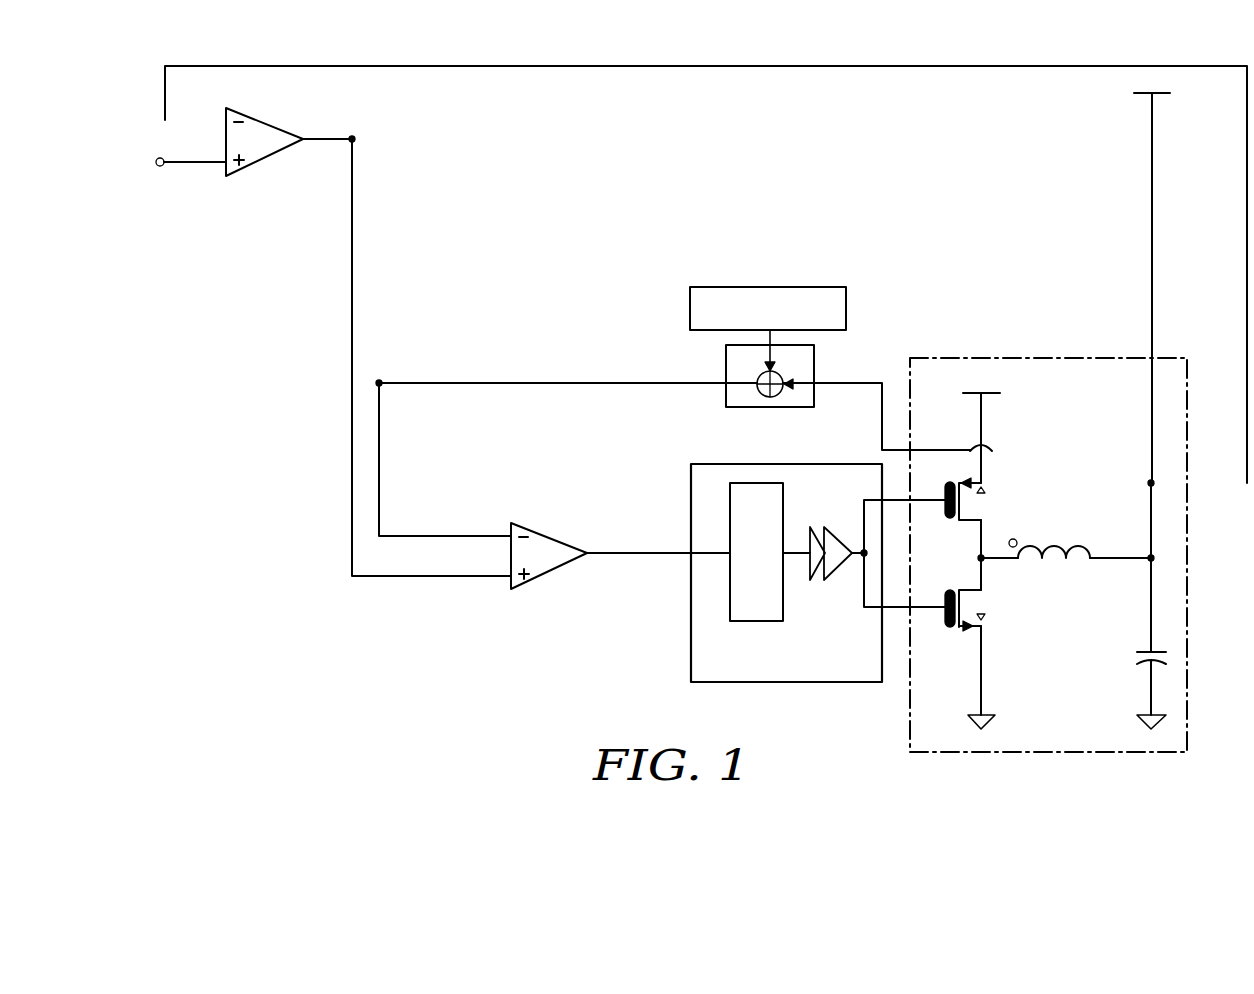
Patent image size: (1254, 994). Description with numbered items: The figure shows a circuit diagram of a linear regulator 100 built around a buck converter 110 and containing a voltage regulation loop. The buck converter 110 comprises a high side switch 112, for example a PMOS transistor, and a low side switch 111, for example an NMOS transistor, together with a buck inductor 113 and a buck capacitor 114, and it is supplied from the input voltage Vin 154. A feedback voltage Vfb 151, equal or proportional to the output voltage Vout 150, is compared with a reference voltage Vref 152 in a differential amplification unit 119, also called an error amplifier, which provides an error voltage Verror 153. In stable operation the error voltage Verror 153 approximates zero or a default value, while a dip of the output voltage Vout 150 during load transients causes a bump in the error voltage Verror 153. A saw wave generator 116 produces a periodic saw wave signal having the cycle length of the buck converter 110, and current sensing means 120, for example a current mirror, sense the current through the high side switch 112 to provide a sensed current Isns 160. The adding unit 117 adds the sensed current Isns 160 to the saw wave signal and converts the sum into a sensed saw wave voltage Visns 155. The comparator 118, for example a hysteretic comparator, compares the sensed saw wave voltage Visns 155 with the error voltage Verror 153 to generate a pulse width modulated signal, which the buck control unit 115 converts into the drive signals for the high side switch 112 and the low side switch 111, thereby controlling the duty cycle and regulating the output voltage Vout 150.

The linear regulator 100 is at (417, 659).
The buck converter 110 is at (1045, 750).
The low side switch 111 is at (983, 600).
The high side switch 112 is at (983, 511).
The buck inductor 113 is at (1062, 565).
The buck capacitor 114 is at (1134, 656).
The buck control unit 115 is at (815, 683).
The saw wave generator 116 is at (797, 285).
The adding unit 117 is at (743, 407).
The comparator 118 is at (556, 570).
The differential amplification unit 119 is at (274, 155).
The current sensing means 120 is at (1000, 448).
The output voltage Vout 150 is at (1135, 482).
The feedback voltage Vfb 151 is at (172, 80).
The reference voltage Vref 152 is at (186, 165).
The error voltage Verror 153 is at (354, 166).
The input voltage Vin 154 is at (1160, 102).
The sensed saw wave voltage Visns 155 is at (483, 533).
The sensed current Isns 160 is at (886, 393).